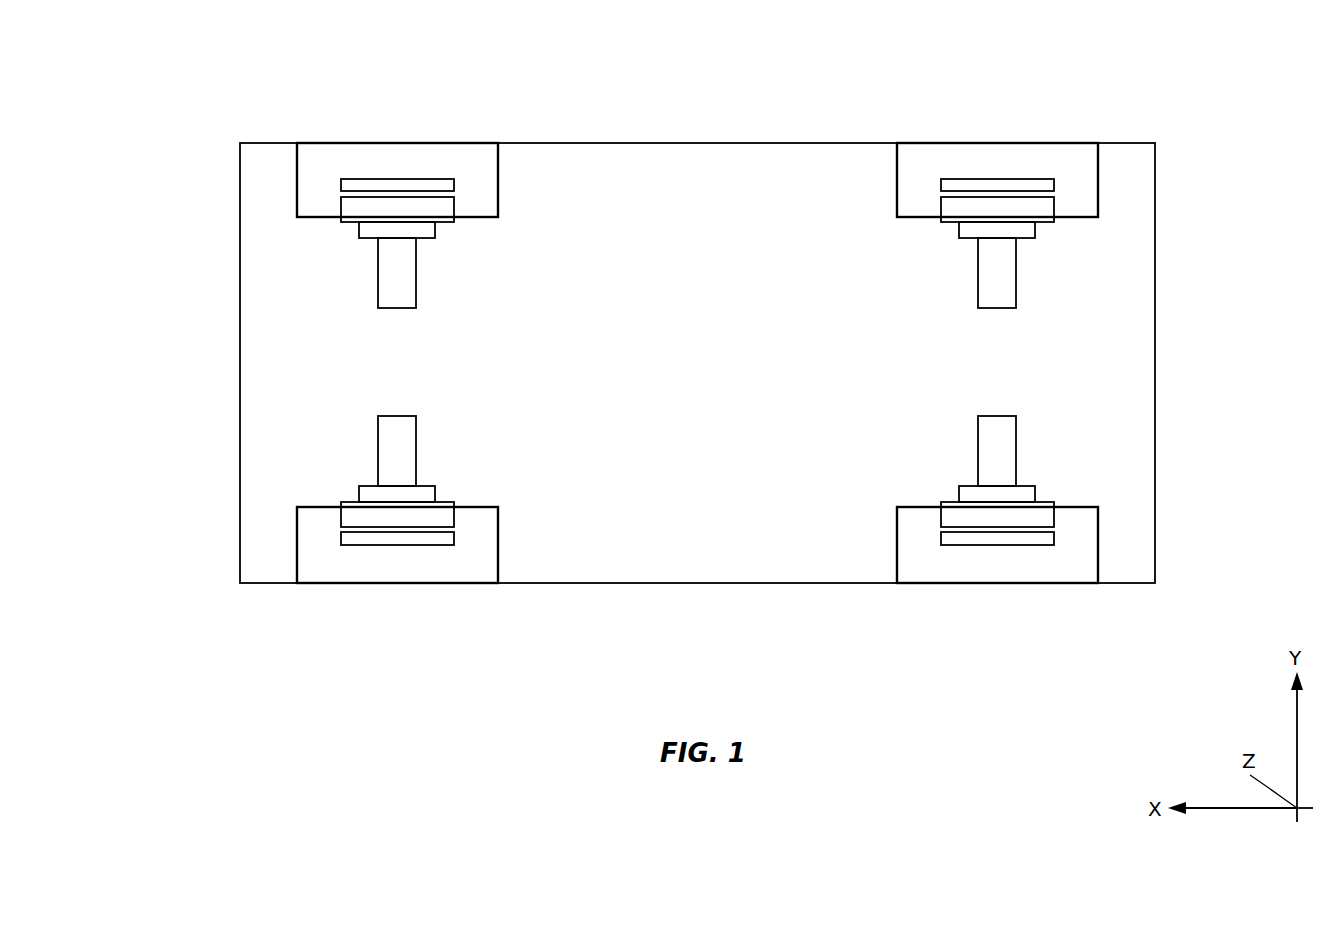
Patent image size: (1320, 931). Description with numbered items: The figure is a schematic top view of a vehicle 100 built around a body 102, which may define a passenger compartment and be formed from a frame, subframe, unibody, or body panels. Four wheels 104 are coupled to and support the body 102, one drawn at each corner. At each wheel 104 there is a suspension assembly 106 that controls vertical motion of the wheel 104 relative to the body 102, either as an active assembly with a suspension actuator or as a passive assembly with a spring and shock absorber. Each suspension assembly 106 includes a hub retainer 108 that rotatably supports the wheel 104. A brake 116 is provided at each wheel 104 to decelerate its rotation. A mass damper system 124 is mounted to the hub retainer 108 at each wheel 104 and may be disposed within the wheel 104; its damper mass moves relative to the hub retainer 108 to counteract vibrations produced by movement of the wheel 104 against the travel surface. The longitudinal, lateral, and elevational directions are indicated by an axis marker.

The vehicle 100 is at (203, 102).
The body 102 is at (638, 583).
The wheel 104 is at (498, 190).
The suspension assembly 106 is at (413, 290).
The hub retainer 108 is at (423, 240).
The brake 116 is at (454, 193).
The mass damper system 124 is at (438, 223).